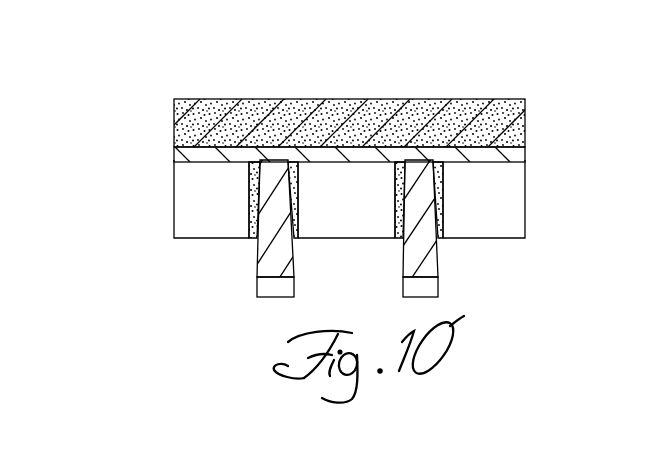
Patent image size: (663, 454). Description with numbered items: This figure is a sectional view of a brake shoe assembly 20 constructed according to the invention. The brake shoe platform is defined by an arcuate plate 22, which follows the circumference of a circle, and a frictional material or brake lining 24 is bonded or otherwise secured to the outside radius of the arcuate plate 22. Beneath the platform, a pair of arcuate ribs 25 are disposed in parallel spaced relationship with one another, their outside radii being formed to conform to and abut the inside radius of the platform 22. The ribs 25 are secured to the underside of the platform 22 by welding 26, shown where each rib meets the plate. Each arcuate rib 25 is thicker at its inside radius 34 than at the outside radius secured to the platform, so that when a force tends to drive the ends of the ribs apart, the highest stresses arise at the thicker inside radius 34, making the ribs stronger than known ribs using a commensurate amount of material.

The brake shoe assembly 20 is at (150, 148).
The arcuate plate 22 is at (524, 152).
The brake lining 24 is at (498, 117).
The arcuate rib 25 is at (275, 255).
The welding 26 is at (437, 160).
The inside radius 34 is at (280, 285).